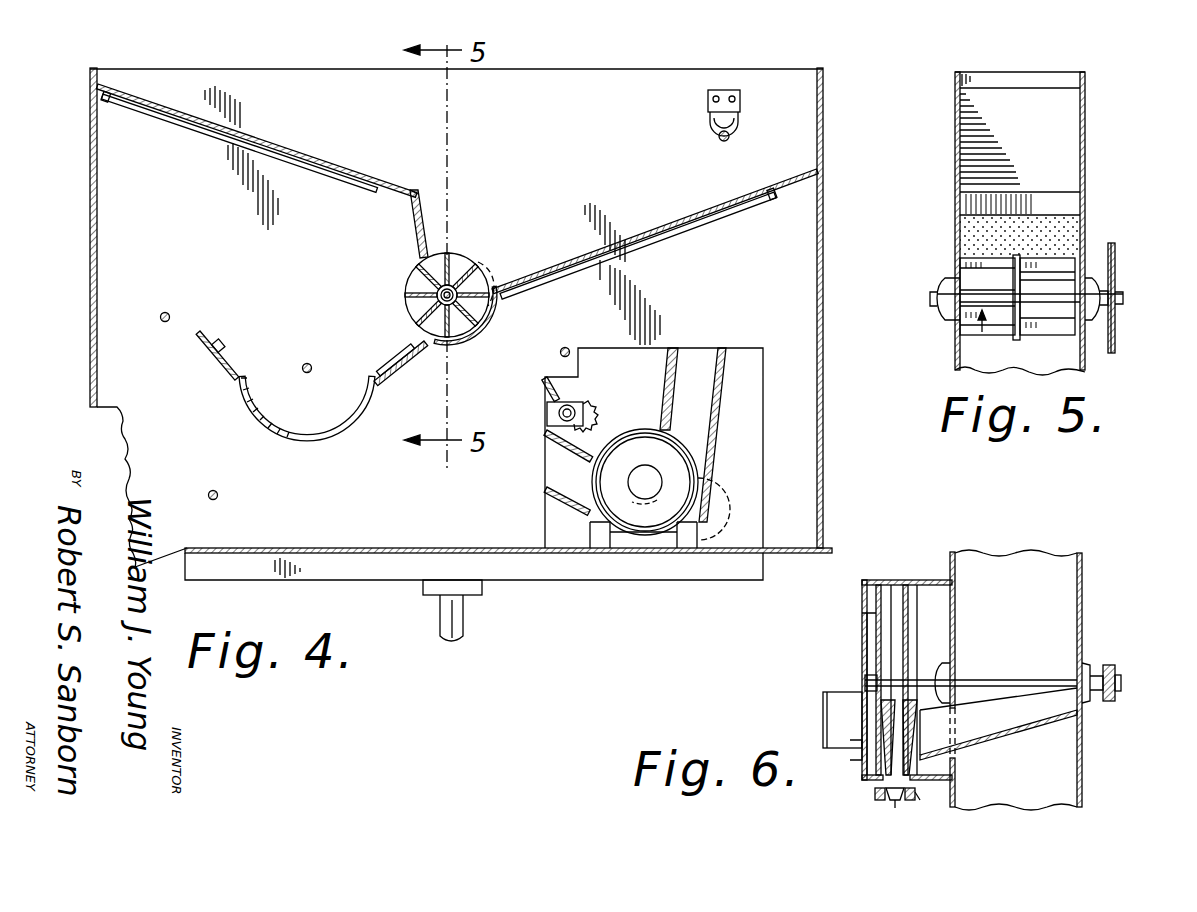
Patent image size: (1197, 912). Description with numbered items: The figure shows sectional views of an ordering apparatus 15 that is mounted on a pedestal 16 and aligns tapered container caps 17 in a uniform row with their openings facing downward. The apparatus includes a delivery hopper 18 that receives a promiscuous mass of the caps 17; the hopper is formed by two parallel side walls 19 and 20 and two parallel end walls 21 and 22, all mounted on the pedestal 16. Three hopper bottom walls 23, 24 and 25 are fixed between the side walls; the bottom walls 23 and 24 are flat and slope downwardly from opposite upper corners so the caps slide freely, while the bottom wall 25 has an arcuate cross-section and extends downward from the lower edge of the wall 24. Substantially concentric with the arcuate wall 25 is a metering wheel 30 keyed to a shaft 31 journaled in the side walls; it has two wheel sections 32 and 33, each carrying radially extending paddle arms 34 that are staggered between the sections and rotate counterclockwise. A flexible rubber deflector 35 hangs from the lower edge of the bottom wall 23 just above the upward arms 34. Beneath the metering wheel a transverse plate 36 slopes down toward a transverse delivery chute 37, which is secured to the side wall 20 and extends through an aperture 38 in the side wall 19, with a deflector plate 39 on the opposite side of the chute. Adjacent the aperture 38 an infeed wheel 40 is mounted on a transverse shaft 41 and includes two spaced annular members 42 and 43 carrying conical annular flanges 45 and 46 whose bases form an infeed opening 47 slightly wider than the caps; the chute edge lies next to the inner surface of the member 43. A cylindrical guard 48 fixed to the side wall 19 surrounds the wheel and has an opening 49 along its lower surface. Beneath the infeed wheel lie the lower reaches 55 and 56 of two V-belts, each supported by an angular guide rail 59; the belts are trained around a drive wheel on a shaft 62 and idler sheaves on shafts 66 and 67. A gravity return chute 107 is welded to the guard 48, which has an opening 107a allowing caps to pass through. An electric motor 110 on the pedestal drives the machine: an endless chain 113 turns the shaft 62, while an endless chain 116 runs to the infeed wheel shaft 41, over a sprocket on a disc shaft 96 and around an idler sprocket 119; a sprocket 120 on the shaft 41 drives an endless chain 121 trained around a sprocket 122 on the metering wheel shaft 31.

In FIG. 4, the ordering apparatus 15 is at (78, 164).
In FIG. 4, the pedestal 16 is at (463, 624).
In FIG. 6, the container caps 17 is at (896, 806).
In FIG. 4, the delivery hopper 18 is at (551, 137).
In FIG. 5, the delivery hopper 18 is at (1082, 110).
In FIG. 5, the side wall 19 is at (955, 146).
In FIG. 6, the side wall 19 is at (952, 552).
In FIG. 4, the side wall 20 is at (300, 80).
In FIG. 5, the side wall 20 is at (1085, 168).
In FIG. 6, the side wall 20 is at (1083, 570).
In FIG. 4, the end wall 21 is at (98, 206).
In FIG. 5, the end wall 21 is at (1068, 80).
In FIG. 4, the end wall 22 is at (816, 250).
In FIG. 4, the hopper bottom wall 23 is at (378, 135).
In FIG. 5, the hopper bottom wall 23 is at (1000, 102).
In FIG. 4, the hopper bottom wall 24 is at (700, 222).
In FIG. 4, the hopper bottom wall 25 is at (488, 312).
In FIG. 4, the metering wheel 30 is at (398, 287).
In FIG. 5, the metering wheel 30 is at (968, 345).
In FIG. 4, the shaft 31 is at (437, 298).
In FIG. 5, the shaft 31 is at (937, 300).
In FIG. 4, the wheel section 32 is at (450, 256).
In FIG. 5, the wheel section 32 is at (960, 328).
In FIG. 5, the wheel section 33 is at (1050, 328).
In FIG. 4, the paddle arms 34 is at (483, 262).
In FIG. 5, the paddle arms 34 is at (972, 262).
In FIG. 4, the deflector 35 is at (414, 228).
In FIG. 5, the deflector 35 is at (1064, 230).
In FIG. 4, the transverse plate 36 is at (412, 340).
In FIG. 5, the transverse plate 36 is at (958, 370).
In FIG. 4, the delivery chute 37 is at (330, 438).
In FIG. 6, the delivery chute 37 is at (996, 738).
In FIG. 6, the aperture 38 is at (958, 700).
In FIG. 4, the deflector plate 39 is at (224, 352).
In FIG. 6, the infeed wheel 40 is at (899, 566).
In FIG. 4, the transverse shaft 41 is at (307, 363).
In FIG. 6, the transverse shaft 41 is at (1050, 678).
In FIG. 6, the annular member 42 is at (876, 592).
In FIG. 6, the annular member 43 is at (920, 594).
In FIG. 6, the annular flange 45 is at (884, 643).
In FIG. 6, the annular flange 46 is at (910, 616).
In FIG. 6, the infeed opening 47 is at (893, 628).
In FIG. 6, the guard 48 is at (926, 584).
In FIG. 6, the opening 49 is at (905, 762).
In FIG. 6, the lower reach 55 is at (890, 802).
In FIG. 6, the lower reach 56 is at (914, 796).
In FIG. 6, the angular guide rail 59 is at (916, 790).
In FIG. 4, the shaft 62 is at (728, 140).
In FIG. 4, the shaft 66 is at (170, 312).
In FIG. 4, the shaft 67 is at (212, 494).
In FIG. 4, the disc shaft 96 is at (560, 353).
In FIG. 6, the gravity return chute 107 is at (823, 712).
In FIG. 6, the opening 107a is at (854, 744).
In FIG. 4, the electric motor 110 is at (633, 536).
In FIG. 4, the endless chain 113 is at (690, 360).
In FIG. 4, the endless chain 116 is at (555, 440).
In FIG. 4, the idler sprocket 119 is at (584, 412).
In FIG. 5, the sprocket 120 is at (1114, 348).
In FIG. 6, the sprocket 120 is at (1108, 676).
In FIG. 6, the endless chain 121 is at (1108, 694).
In FIG. 5, the sprocket 122 is at (1112, 270).